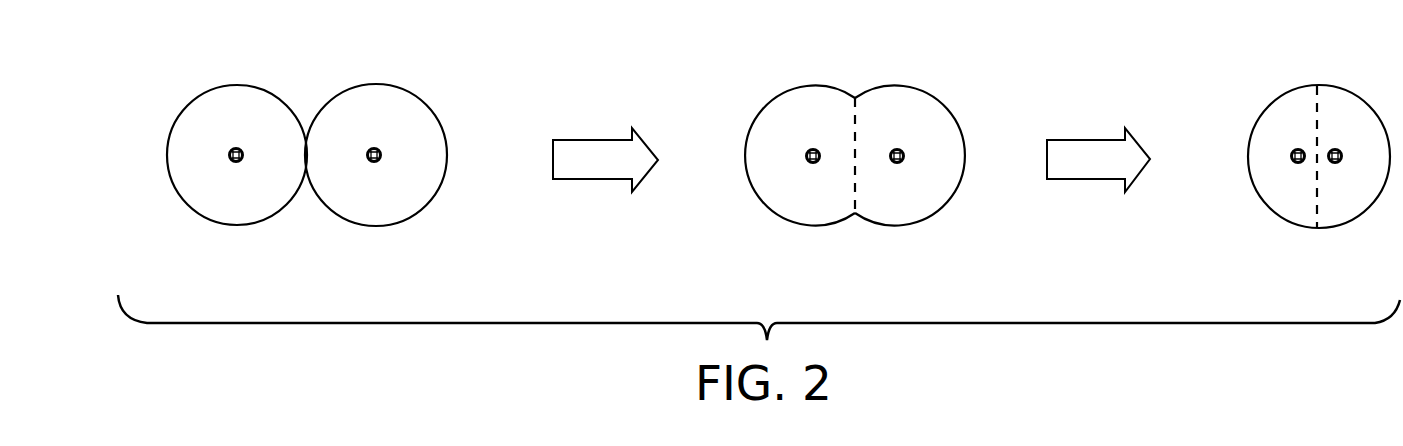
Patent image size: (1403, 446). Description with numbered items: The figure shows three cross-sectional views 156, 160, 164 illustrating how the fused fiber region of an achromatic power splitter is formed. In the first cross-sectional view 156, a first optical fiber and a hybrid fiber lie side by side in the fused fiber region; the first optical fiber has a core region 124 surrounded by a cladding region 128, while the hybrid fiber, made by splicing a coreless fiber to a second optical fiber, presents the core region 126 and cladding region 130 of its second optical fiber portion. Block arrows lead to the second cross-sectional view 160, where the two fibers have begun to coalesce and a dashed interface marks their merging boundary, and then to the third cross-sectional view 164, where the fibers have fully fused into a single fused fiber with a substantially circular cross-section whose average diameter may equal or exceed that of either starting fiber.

The core region 124 is at (230, 147).
The core region 126 is at (382, 160).
The cladding region 128 is at (192, 167).
The cladding region 130 is at (393, 108).
The cross-sectional view 156 is at (261, 32).
The cross-sectional view 160 is at (820, 47).
The cross-sectional view 164 is at (1232, 47).